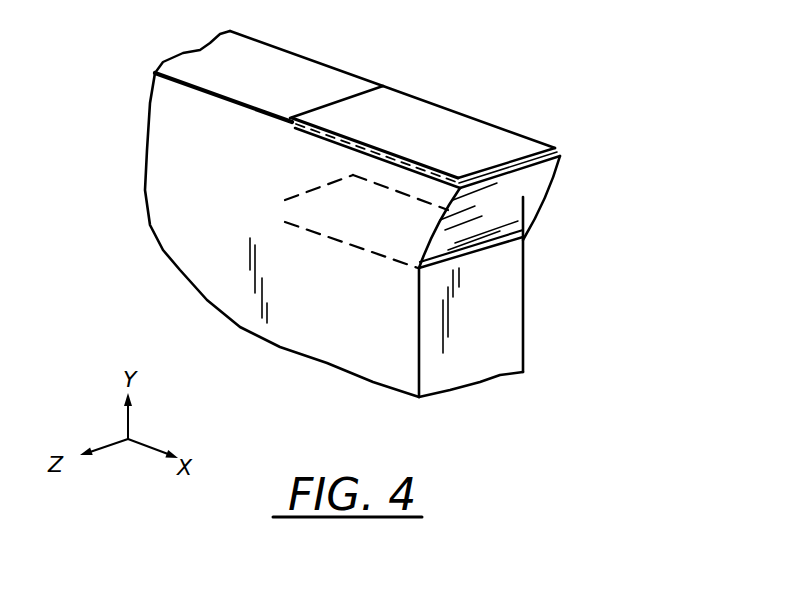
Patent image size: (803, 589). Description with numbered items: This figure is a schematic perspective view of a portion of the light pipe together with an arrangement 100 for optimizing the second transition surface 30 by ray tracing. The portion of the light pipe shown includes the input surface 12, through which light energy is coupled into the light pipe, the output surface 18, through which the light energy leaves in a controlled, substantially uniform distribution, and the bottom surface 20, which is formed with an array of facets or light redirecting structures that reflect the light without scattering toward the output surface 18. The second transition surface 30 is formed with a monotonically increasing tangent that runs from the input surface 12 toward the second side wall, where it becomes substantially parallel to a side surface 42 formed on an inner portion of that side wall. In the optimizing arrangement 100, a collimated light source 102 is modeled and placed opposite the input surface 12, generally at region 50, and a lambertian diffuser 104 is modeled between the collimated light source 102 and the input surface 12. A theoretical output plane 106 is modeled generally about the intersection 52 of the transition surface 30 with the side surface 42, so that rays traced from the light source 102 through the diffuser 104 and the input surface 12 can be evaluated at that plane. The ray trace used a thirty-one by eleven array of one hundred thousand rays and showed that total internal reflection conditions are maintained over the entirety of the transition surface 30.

The arrangement for optimizing transition surface 100 is at (235, 175).
The input surface 12 is at (237, 72).
The collimated light source 102 is at (442, 128).
The lambertian diffuser 104 is at (296, 133).
The theoretical output plane 106 is at (252, 218).
The region 50 is at (572, 57).
The output surface 18 is at (255, 293).
The second transition surface 30 is at (510, 198).
The intersection 52 is at (495, 250).
The bottom surface 20 is at (523, 312).
The side surface 42 is at (470, 350).